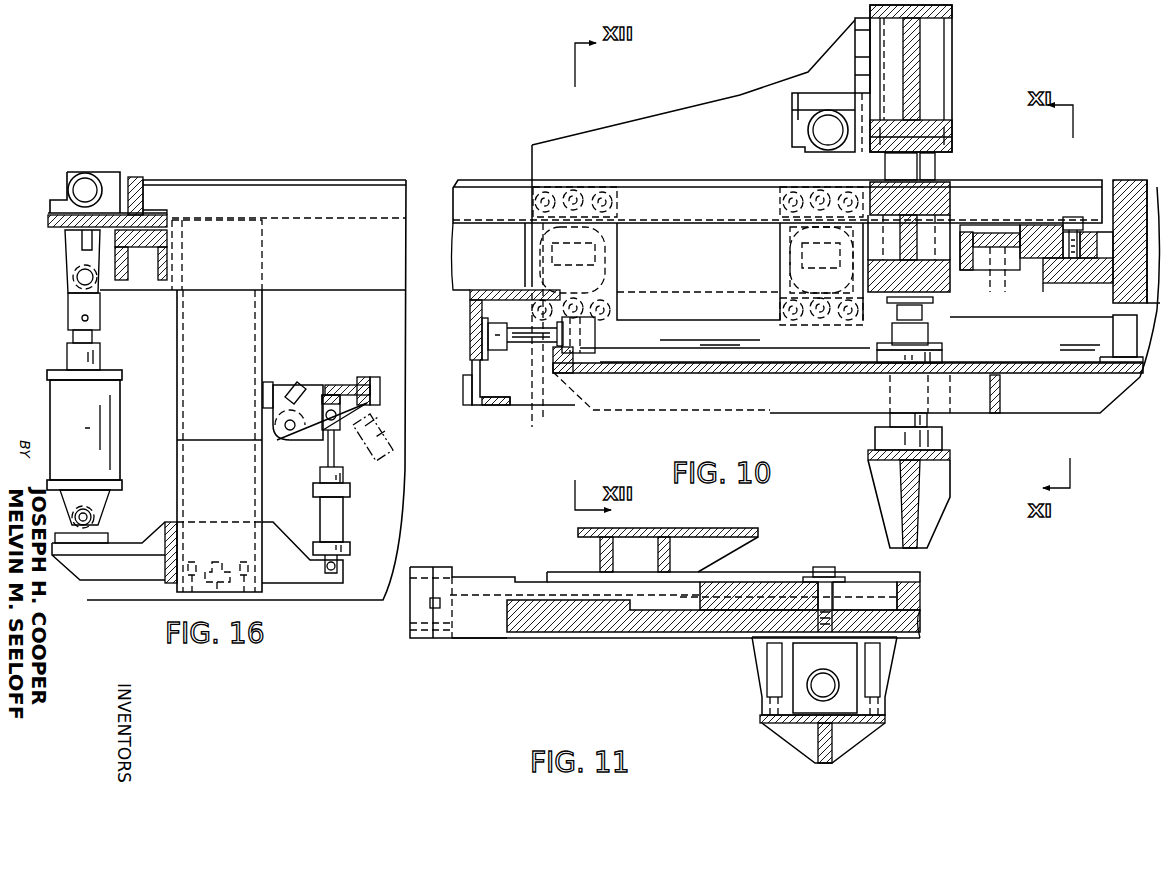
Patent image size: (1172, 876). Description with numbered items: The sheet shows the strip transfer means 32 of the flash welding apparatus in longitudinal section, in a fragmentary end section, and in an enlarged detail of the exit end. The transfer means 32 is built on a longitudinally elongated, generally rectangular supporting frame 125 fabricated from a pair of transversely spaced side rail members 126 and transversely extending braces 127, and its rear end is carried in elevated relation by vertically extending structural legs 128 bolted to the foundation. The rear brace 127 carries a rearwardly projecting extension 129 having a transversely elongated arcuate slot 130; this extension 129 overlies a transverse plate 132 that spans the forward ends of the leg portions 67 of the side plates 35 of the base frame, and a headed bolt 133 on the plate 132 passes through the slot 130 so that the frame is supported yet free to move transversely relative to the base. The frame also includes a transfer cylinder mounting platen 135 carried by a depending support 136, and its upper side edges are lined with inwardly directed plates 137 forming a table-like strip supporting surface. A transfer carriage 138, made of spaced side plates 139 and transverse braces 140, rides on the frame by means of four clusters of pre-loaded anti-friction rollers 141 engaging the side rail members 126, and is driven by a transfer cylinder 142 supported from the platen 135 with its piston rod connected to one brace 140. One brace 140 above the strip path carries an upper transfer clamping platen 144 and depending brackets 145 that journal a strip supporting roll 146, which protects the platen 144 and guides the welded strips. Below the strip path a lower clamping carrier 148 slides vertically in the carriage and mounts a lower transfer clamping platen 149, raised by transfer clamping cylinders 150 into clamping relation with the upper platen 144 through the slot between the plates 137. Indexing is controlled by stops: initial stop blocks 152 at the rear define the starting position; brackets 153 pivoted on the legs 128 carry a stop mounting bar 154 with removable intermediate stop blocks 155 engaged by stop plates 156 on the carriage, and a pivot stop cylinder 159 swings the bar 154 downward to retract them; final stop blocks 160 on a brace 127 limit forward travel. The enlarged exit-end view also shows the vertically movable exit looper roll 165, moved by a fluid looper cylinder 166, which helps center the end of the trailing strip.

In FIG. 10, the transfer means 32 is at (712, 54).
In FIG. 10, the side plates 35 is at (1150, 350).
In FIG. 10, the leg portions 67 is at (1150, 187).
In FIG. 16, the supporting frame 125 is at (268, 228).
In FIG. 11, the supporting frame 125 is at (475, 583).
In FIG. 16, the side rail members 126 is at (340, 230).
In FIG. 10, the side rail members 126 is at (777, 235).
In FIG. 11, the side rail members 126 is at (425, 572).
In FIG. 16, the braces 127 is at (150, 212).
In FIG. 10, the braces 127 is at (997, 237).
In FIG. 11, the braces 127 is at (530, 590).
In FIG. 16, the structural legs 128 is at (185, 492).
In FIG. 10, the extension 129 is at (1100, 220).
In FIG. 11, the extension 129 is at (763, 583).
In FIG. 10, the arcuate slot 130 is at (1055, 240).
In FIG. 11, the arcuate slot 130 is at (880, 588).
In FIG. 10, the transverse plate 132 is at (1057, 282).
In FIG. 11, the transverse plate 132 is at (683, 627).
In FIG. 10, the headed bolt 133 is at (1080, 223).
In FIG. 11, the headed bolt 133 is at (838, 577).
In FIG. 10, the transfer cylinder mounting platen 135 is at (667, 400).
In FIG. 11, the transfer cylinder mounting platen 135 is at (853, 738).
In FIG. 10, the support 136 is at (1023, 310).
In FIG. 11, the support 136 is at (880, 662).
In FIG. 11, the plates 137 is at (677, 535).
In FIG. 10, the transfer carriage 138 is at (753, 98).
In FIG. 10, the side plates 139 is at (623, 133).
In FIG. 10, the braces 140 is at (915, 97).
In FIG. 10, the anti-friction rollers 141 is at (570, 187).
In FIG. 10, the transfer cylinder 142 is at (733, 325).
In FIG. 11, the transfer cylinder 142 is at (823, 692).
In FIG. 10, the upper transfer clamping platen 144 is at (940, 137).
In FIG. 10, the brackets 145 is at (832, 57).
In FIG. 10, the strip supporting roll 146 is at (808, 128).
In FIG. 10, the lower clamping carrier 148 is at (870, 268).
In FIG. 10, the lower transfer clamping platen 149 is at (937, 182).
In FIG. 10, the transfer clamping cylinders 150 is at (927, 437).
In FIG. 10, the initial stop blocks 152 is at (955, 223).
In FIG. 16, the brackets 153 is at (308, 397).
In FIG. 16, the stop mounting bar 154 is at (363, 380).
In FIG. 16, the intermediate stop blocks 155 is at (380, 385).
In FIG. 10, the stop plates 156 is at (463, 392).
In FIG. 16, the pivot stop cylinder 159 is at (328, 512).
In FIG. 16, the final stop blocks 160 is at (172, 220).
In FIG. 16, the exit looper roll 165 is at (72, 180).
In FIG. 16, the fluid looper cylinder 166 is at (53, 402).